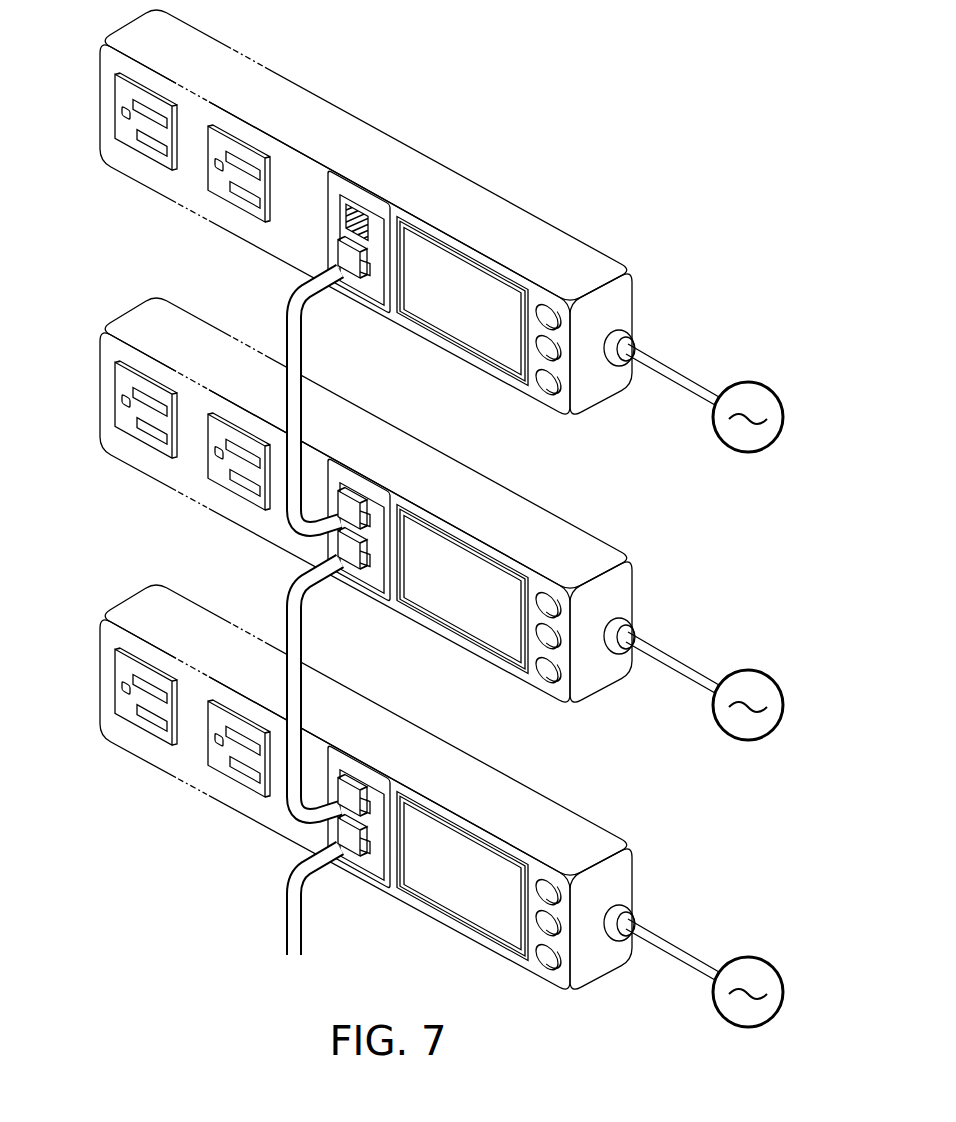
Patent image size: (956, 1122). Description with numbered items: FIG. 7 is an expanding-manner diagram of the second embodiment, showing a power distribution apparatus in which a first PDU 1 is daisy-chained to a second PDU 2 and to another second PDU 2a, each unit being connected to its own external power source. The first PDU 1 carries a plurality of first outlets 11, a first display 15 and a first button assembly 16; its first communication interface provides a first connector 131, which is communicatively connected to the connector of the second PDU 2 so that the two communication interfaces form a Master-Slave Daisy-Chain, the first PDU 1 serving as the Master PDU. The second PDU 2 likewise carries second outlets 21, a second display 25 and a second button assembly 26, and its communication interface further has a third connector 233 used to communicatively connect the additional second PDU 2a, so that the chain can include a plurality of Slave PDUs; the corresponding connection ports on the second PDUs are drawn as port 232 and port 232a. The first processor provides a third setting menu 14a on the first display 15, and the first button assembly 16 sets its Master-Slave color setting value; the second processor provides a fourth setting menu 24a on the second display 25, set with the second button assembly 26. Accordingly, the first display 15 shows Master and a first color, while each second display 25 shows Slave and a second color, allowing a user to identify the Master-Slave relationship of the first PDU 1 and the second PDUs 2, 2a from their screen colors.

The first PDU 1 is at (637, 308).
The first outlets 11 is at (252, 213).
The first connector 131 is at (375, 265).
The third setting menu 14a is at (487, 290).
The first display 15 is at (431, 232).
The first button assembly 16 is at (547, 390).
The second PDU 2 is at (637, 596).
The second outlets 21 is at (252, 501).
The first connection port of slave power strip 232 is at (343, 488).
The third connector 233 is at (375, 548).
The fourth setting menu 24a is at (487, 578).
The second display 25 is at (431, 520).
The second button assembly 26 is at (547, 678).
The second PDU 2a is at (637, 883).
The first connection port of second slave power strip 232a is at (343, 775).